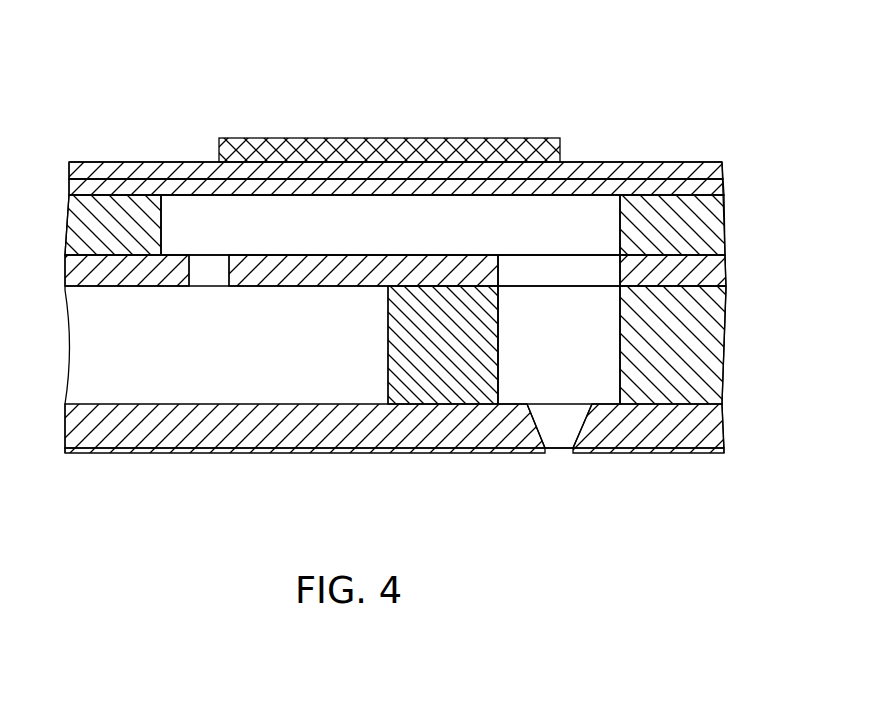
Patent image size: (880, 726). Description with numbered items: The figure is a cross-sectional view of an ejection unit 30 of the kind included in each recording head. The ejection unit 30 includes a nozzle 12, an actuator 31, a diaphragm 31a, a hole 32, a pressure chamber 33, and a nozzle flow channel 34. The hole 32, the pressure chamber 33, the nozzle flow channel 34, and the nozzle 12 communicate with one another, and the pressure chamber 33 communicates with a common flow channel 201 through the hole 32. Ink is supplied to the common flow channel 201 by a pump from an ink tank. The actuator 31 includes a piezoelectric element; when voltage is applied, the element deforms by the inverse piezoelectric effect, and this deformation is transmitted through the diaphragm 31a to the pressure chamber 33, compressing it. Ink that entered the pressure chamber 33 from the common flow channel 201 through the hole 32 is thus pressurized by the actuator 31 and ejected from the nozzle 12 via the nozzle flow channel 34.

The ejection unit 30 is at (436, 272).
The actuator 31 is at (562, 150).
The diaphragm 31a is at (723, 166).
The pressure chamber 33 is at (590, 228).
The hole 32 is at (208, 272).
The nozzle flow channel 34 is at (592, 330).
The common flow channel 201 is at (308, 393).
The nozzle 12 is at (560, 450).